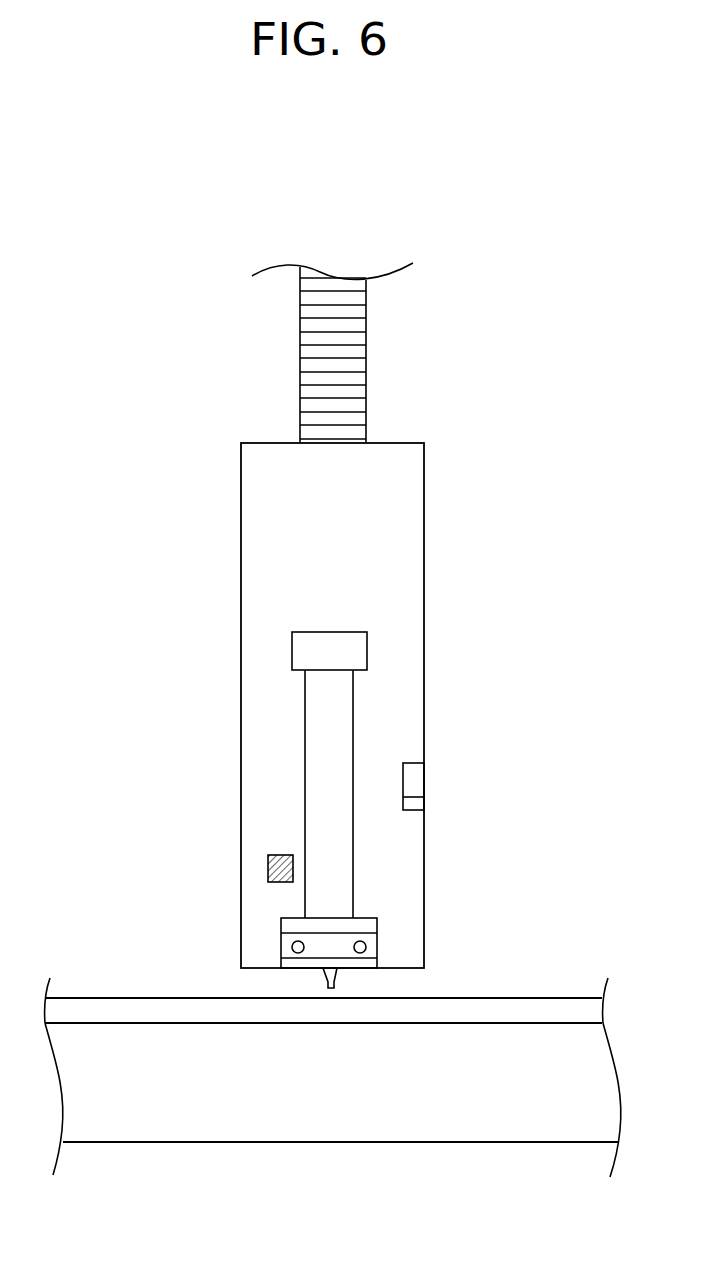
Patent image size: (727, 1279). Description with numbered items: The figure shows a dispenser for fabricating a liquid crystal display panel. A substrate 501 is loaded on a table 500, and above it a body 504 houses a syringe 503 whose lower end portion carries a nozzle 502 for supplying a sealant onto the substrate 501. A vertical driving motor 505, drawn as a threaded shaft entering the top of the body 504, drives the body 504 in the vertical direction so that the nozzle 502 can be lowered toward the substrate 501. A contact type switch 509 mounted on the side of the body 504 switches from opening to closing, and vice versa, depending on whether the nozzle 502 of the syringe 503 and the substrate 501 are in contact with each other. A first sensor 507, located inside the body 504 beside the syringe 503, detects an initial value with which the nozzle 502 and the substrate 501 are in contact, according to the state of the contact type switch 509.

The table 500 is at (558, 1120).
The substrate 501 is at (560, 1010).
The nozzle 502 is at (323, 975).
The syringe 503 is at (328, 718).
The body 504 is at (255, 575).
The vertical driving motor 505 is at (348, 362).
The first sensor 507 is at (268, 866).
The contact type switch 509 is at (415, 783).